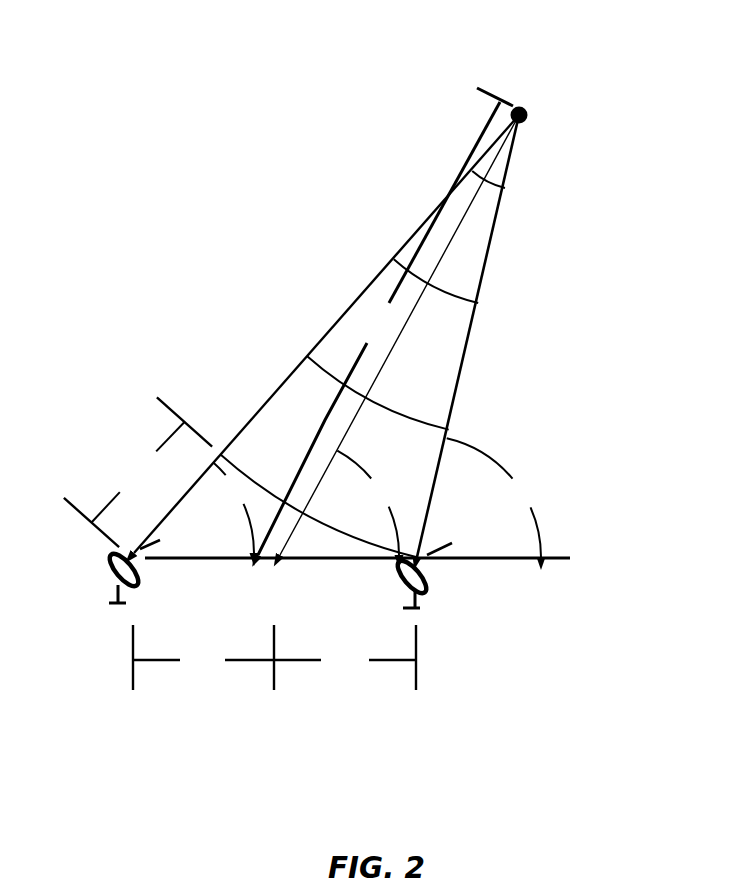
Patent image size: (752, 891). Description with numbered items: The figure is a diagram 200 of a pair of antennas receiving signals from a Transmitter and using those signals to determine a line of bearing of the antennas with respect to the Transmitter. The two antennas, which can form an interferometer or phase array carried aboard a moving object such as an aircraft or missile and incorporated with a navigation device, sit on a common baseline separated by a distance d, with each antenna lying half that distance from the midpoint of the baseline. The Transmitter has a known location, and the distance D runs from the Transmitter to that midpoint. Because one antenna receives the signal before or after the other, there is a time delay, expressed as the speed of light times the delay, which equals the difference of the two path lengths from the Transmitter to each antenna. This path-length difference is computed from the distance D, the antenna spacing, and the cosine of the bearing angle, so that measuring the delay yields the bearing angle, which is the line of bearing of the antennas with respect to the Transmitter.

The diagram of a pair of antennas receiving signals from a transmitter 200 is at (149, 58).
The transmitter Transmitter is at (579, 130).
The distance between the transmitter and the midpoint between the antennas D is at (385, 321).